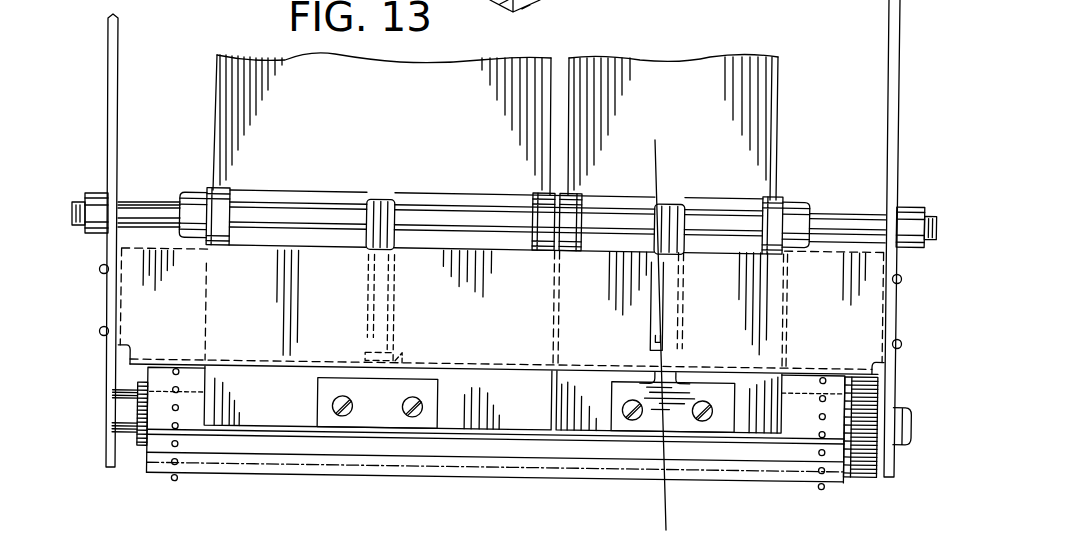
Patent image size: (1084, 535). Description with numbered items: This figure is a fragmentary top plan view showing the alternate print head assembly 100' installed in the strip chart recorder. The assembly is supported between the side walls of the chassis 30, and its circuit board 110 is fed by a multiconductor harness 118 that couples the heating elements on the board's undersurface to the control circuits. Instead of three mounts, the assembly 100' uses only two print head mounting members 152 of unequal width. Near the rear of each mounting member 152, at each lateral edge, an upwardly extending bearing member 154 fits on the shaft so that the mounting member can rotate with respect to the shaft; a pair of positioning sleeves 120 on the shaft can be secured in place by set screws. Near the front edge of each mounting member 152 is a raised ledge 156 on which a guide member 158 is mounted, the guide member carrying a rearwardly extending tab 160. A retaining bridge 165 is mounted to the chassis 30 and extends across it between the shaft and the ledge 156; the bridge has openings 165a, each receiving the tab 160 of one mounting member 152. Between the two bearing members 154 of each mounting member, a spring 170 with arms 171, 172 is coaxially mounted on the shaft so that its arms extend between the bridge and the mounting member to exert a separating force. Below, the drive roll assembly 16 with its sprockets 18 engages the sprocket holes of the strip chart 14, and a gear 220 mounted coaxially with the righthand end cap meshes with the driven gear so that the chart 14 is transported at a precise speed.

The strip chart material 14 is at (682, 155).
The drive roll assembly 16 is at (301, 484).
The sprockets 18 is at (172, 481).
The chassis 30 is at (108, 82).
The print head assembly 100' is at (823, 128).
The circuit board 110 is at (483, 5).
The multiconductor harness 118 is at (376, 122).
The positioning sleeves 120 is at (198, 207).
The print head mounting member 152 is at (219, 434).
The bearing member 154 is at (216, 230).
The raised ledge 156 is at (570, 420).
The guide member 158 is at (320, 408).
The tab 160 is at (380, 352).
The retaining bridge 165 is at (254, 318).
The openings 165a is at (401, 356).
The spring 170 is at (358, 238).
The spring arm 171 is at (366, 302).
The spring arm 172 is at (395, 314).
The gear 220 is at (865, 468).